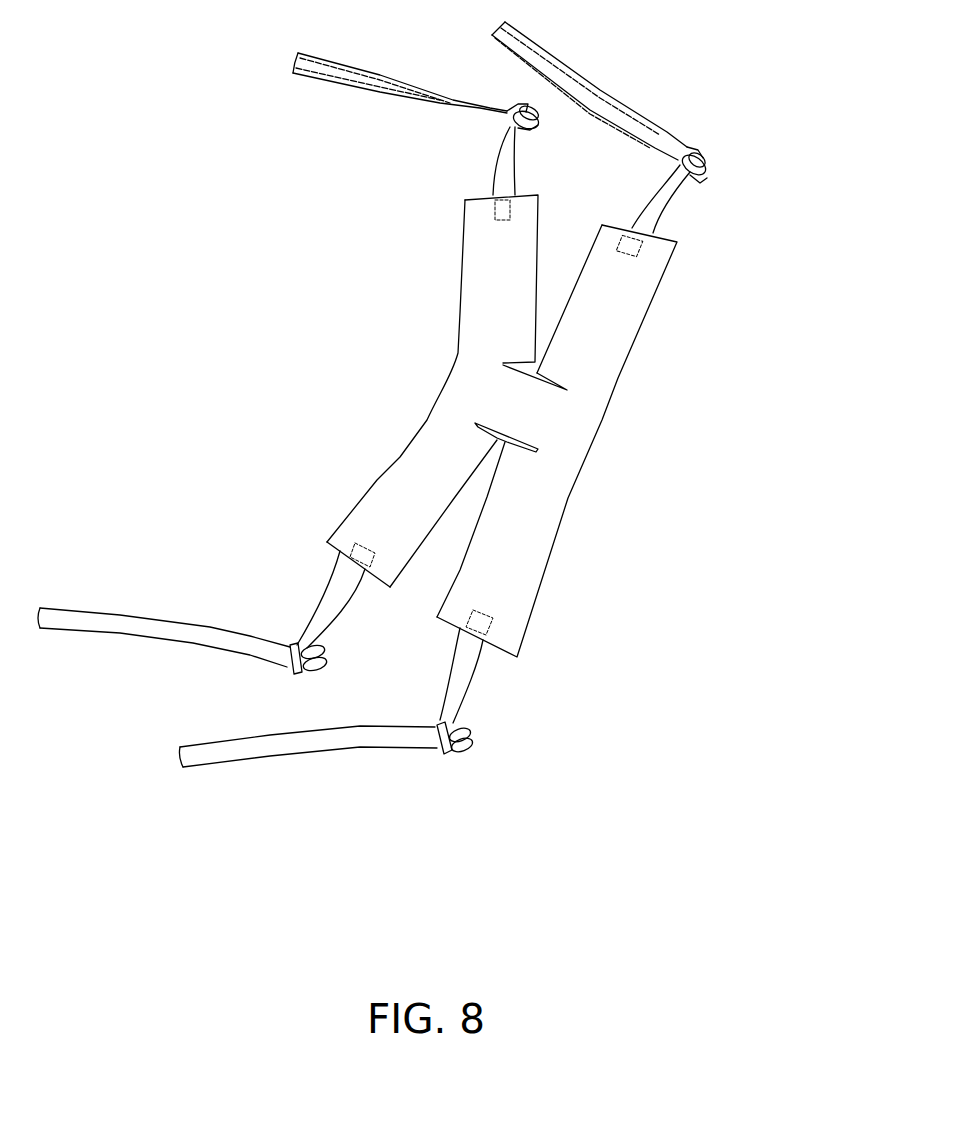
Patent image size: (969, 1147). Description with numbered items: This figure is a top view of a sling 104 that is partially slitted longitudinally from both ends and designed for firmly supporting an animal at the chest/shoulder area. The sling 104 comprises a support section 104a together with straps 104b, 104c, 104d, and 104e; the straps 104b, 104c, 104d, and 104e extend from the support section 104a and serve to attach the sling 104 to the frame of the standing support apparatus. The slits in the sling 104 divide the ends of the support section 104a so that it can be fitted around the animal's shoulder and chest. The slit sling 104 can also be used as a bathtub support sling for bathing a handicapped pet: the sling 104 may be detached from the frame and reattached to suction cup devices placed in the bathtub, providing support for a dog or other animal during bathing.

The sling 104 is at (385, 368).
The support section 104a is at (593, 378).
The strap 104b is at (455, 692).
The strap 104c is at (320, 610).
The strap 104d is at (507, 163).
The strap 104e is at (655, 203).